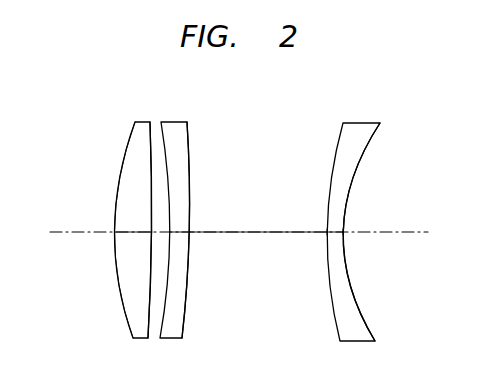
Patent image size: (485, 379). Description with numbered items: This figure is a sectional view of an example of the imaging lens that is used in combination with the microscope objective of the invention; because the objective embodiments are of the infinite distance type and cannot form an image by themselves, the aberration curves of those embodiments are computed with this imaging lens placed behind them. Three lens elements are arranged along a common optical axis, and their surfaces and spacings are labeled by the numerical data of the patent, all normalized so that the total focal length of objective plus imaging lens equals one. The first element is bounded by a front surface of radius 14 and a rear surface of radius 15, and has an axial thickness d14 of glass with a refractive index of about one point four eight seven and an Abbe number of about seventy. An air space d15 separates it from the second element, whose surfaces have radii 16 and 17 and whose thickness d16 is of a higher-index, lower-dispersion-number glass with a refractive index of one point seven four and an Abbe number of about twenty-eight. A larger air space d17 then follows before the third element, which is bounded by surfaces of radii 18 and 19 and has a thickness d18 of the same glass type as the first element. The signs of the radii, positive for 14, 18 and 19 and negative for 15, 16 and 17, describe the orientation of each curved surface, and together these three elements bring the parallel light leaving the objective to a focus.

The radius of curvature r14 14 is at (128, 126).
The radius of curvature r15 15 is at (153, 131).
The radius of curvature r16 16 is at (168, 137).
The radius of curvature r17 17 is at (193, 137).
The radius of curvature r18 18 is at (342, 128).
The radius of curvature r19 19 is at (375, 140).
The thickness d14 is at (136, 236).
The airspace d15 is at (155, 213).
The thickness d16 is at (189, 249).
The airspace d17 is at (258, 247).
The thickness d18 is at (328, 250).